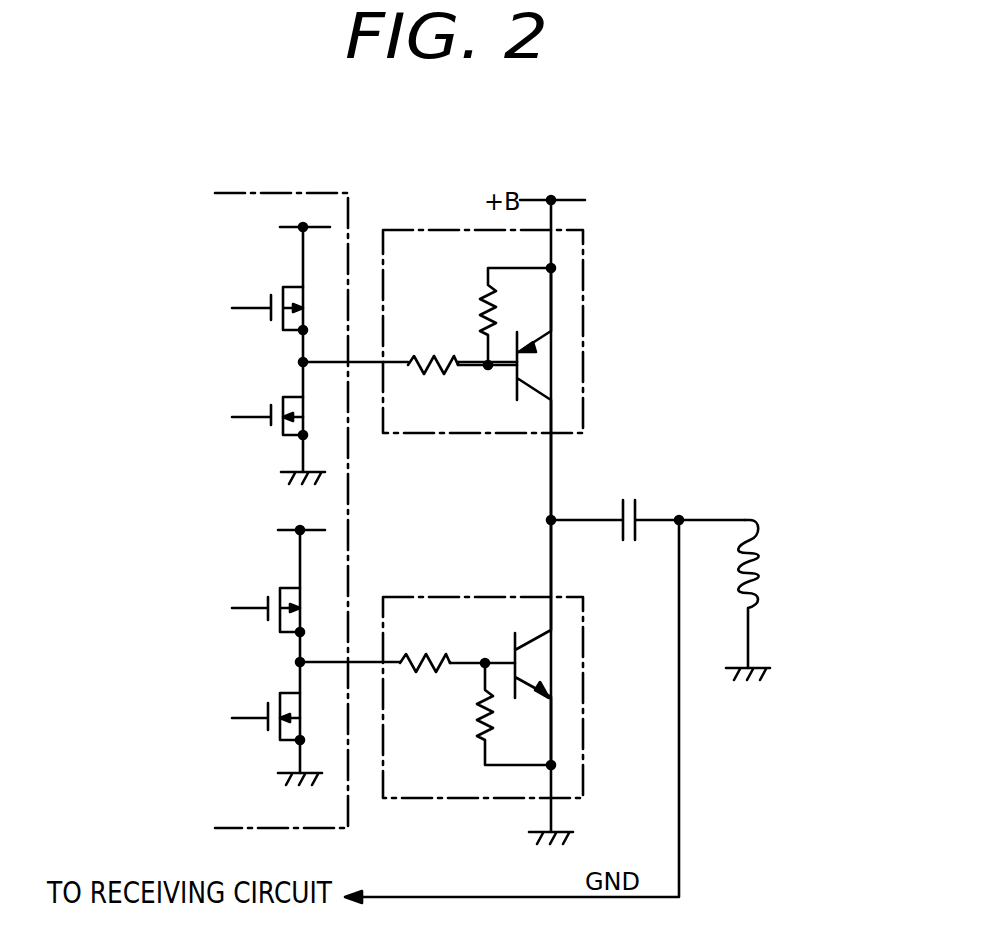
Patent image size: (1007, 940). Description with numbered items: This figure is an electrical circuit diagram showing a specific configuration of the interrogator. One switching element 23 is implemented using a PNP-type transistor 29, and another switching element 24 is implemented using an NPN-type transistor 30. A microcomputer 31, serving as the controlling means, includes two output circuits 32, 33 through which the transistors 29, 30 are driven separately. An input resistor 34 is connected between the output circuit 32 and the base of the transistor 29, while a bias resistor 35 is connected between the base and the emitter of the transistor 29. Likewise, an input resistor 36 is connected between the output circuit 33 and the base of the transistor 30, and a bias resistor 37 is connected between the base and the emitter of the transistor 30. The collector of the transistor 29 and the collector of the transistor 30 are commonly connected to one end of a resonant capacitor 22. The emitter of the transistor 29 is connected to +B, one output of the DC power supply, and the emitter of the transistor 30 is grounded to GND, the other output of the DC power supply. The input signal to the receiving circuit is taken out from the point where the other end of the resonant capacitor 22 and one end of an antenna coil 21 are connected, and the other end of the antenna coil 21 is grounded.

The antenna coil 21 is at (762, 575).
The resonant capacitor 22 is at (640, 503).
The one switching element 23 is at (572, 300).
The another switching element 24 is at (585, 626).
The PNP-type transistor 29 is at (537, 379).
The NPN-type transistor 30 is at (530, 679).
The microcomputer 31 is at (335, 572).
The output circuit 32 is at (258, 284).
The output circuit 33 is at (259, 734).
The input resistor 34 is at (428, 360).
The bias resistor 35 is at (482, 298).
The input resistor 36 is at (432, 669).
The bias resistor 37 is at (485, 722).